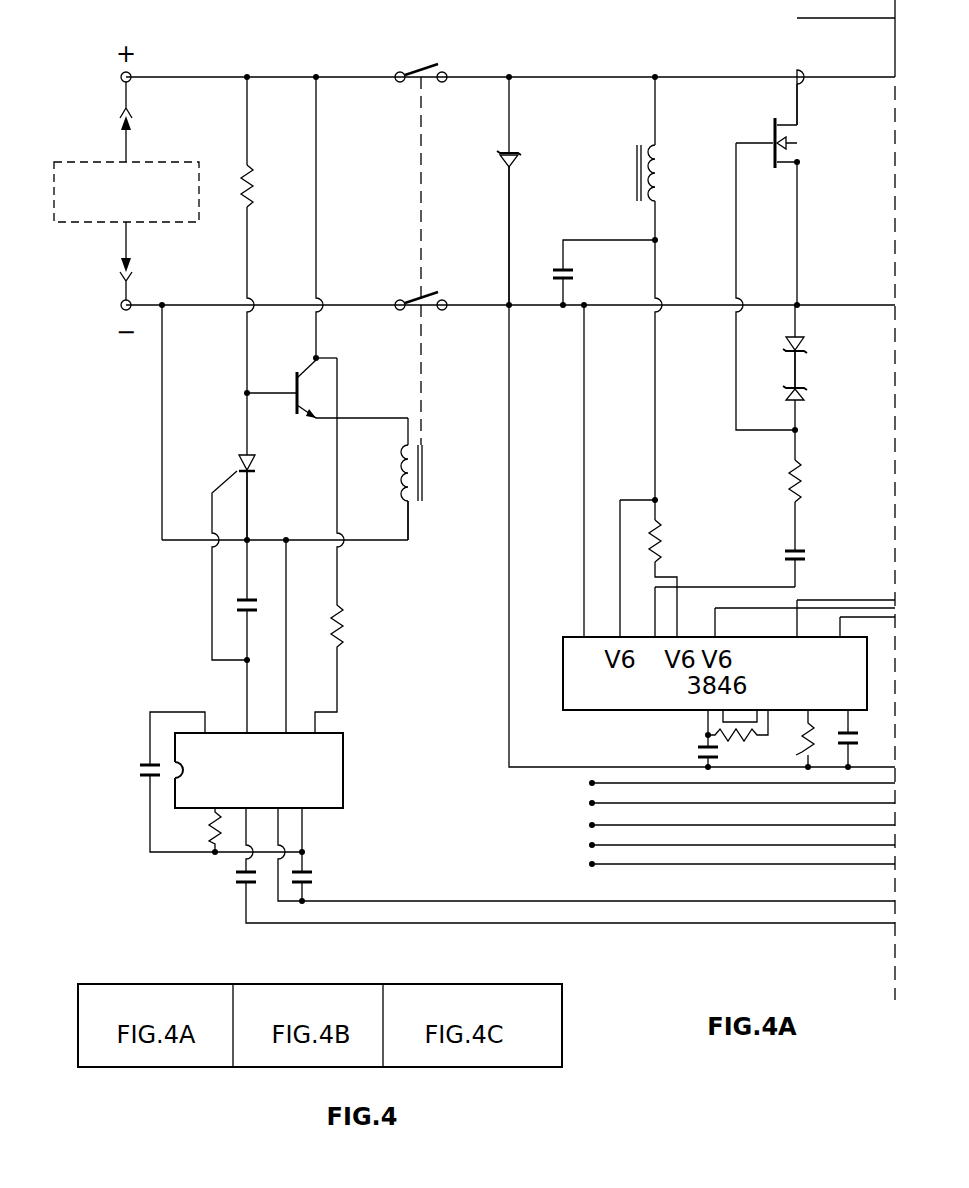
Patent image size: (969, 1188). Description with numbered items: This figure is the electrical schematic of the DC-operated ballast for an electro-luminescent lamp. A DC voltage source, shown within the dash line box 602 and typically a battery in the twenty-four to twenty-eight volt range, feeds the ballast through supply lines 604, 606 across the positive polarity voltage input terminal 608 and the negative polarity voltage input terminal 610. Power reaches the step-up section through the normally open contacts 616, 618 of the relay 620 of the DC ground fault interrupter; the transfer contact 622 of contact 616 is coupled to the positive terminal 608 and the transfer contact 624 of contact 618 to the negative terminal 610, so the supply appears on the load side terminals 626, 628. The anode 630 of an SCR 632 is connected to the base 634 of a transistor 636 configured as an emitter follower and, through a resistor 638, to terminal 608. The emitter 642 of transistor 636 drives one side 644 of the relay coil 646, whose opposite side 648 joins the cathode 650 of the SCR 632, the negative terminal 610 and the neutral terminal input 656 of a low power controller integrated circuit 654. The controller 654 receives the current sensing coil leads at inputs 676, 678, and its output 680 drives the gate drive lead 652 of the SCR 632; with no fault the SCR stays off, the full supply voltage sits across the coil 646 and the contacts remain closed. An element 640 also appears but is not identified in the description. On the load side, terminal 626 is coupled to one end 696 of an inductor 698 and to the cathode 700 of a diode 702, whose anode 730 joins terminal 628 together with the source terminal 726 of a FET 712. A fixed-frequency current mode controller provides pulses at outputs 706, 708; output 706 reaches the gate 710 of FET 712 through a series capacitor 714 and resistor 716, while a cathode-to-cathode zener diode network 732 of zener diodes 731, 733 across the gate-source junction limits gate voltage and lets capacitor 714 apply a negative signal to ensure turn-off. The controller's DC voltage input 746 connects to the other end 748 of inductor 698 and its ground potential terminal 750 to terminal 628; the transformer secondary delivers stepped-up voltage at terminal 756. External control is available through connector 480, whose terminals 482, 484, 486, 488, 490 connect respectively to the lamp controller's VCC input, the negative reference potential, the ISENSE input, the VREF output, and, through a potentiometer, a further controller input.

The dash line box 602 is at (100, 160).
The supply line 604 is at (128, 150).
The supply line 606 is at (128, 232).
The positive polarity voltage input terminal 608 is at (124, 95).
The negative polarity voltage input terminal 610 is at (124, 293).
The normally open relay contact 616 is at (426, 66).
The normally open relay contact 618 is at (418, 292).
The relay 620 is at (423, 472).
The transfer contact 622 is at (400, 71).
The transfer contact 624 is at (400, 300).
The load side terminal 626 is at (445, 70).
The load side terminal 628 is at (445, 312).
The anode 630 is at (238, 457).
The SCR 632 is at (258, 466).
The base 634 is at (268, 390).
The transistor 636 is at (303, 358).
The resistor 638 is at (252, 170).
The collector node 640 is at (316, 350).
The emitter 642 is at (323, 418).
The relay coil side 644 is at (357, 418).
The relay coil 646 is at (404, 482).
The relay coil opposite side 648 is at (370, 545).
The cathode 650 is at (250, 475).
The gate drive lead 652 is at (235, 478).
The low power controller integrated circuit 654 is at (362, 760).
The neutral terminal input 656 is at (290, 733).
The controller input 676 is at (270, 815).
The controller input 678 is at (283, 812).
The controller output 680 is at (240, 733).
The inductor end 696 is at (653, 115).
The inductor 698 is at (618, 158).
The cathode 700 is at (500, 150).
The diode 702 is at (500, 165).
The controller output 706 is at (655, 568).
The controller output 708 is at (800, 637).
The gate 710 is at (753, 143).
The FET 712 is at (818, 140).
The series capacitor 714 is at (804, 552).
The resistor 716 is at (805, 480).
The source terminal 726 is at (800, 212).
The anode 730 is at (512, 170).
The zener diode 731 is at (805, 335).
The cathode-to-cathode zener diode network 732 is at (816, 374).
The zener diode 733 is at (803, 402).
The DC voltage input 746 is at (584, 630).
The inductor end 748 is at (657, 265).
The ground potential terminal 750 is at (710, 633).
The secondary winding terminal 756 is at (795, 115).
The connector 480 is at (655, 885).
The terminal 482 is at (592, 866).
The terminal 484 is at (592, 847).
The terminal 486 is at (592, 827).
The terminal 488 is at (592, 805).
The terminal 490 is at (592, 785).